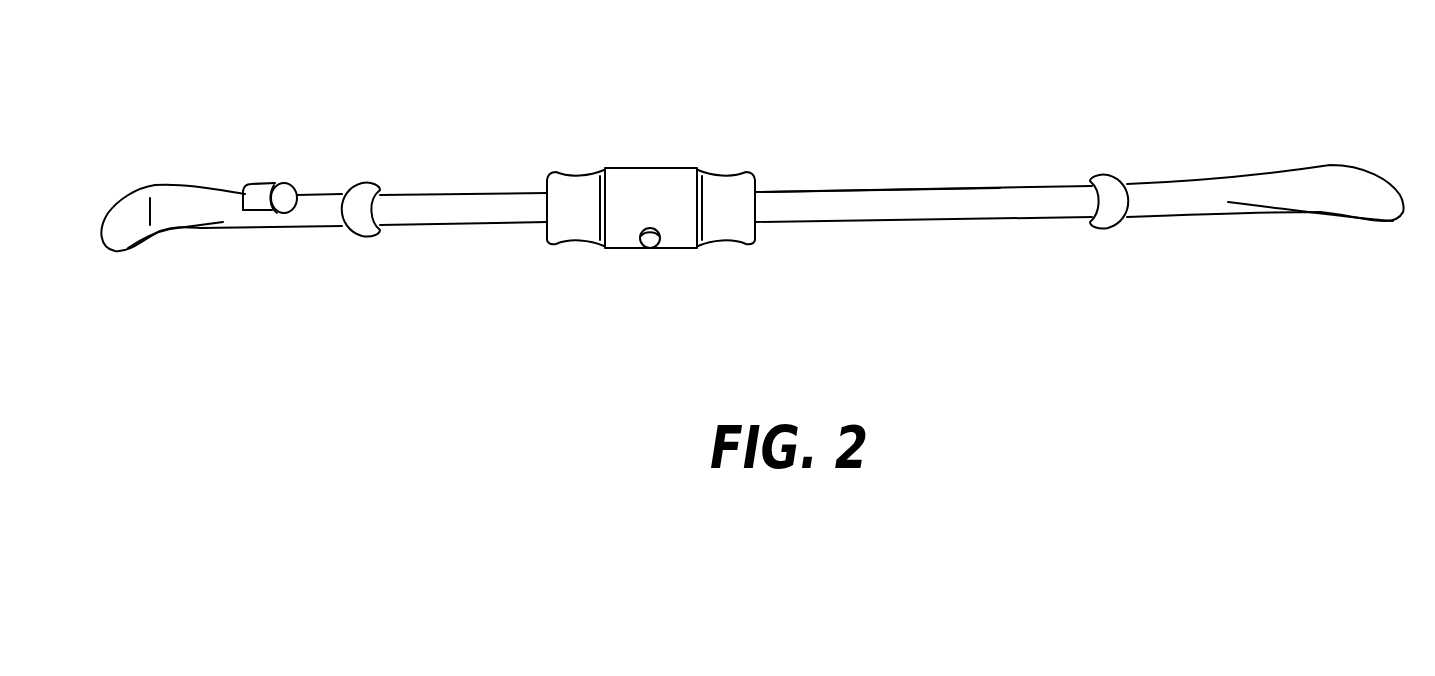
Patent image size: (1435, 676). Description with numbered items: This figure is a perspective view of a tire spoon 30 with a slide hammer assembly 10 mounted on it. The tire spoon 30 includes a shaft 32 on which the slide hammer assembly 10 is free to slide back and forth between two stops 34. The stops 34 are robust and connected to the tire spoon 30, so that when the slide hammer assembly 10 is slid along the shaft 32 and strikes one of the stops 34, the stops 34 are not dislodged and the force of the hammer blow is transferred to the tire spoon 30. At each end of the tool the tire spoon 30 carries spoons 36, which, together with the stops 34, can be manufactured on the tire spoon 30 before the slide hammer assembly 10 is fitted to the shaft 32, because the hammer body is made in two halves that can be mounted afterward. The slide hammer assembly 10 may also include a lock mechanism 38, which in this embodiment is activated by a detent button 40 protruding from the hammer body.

The slide hammer assembly 10 is at (651, 225).
The tire spoon 30 is at (808, 174).
The shaft 32 is at (880, 199).
The stops 34 is at (364, 183).
The spoons 36 is at (162, 193).
The lock mechanism 38 is at (628, 257).
The detent button 40 is at (655, 240).